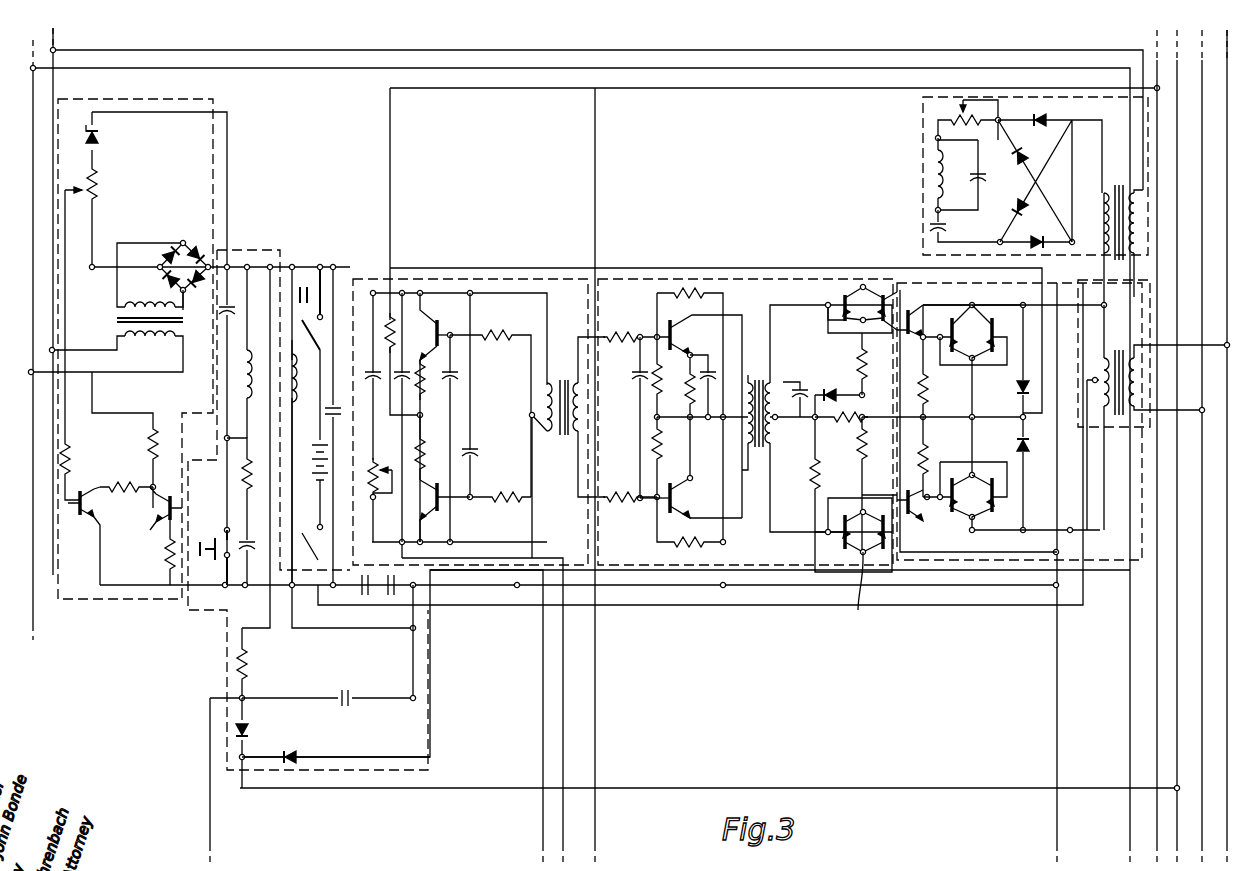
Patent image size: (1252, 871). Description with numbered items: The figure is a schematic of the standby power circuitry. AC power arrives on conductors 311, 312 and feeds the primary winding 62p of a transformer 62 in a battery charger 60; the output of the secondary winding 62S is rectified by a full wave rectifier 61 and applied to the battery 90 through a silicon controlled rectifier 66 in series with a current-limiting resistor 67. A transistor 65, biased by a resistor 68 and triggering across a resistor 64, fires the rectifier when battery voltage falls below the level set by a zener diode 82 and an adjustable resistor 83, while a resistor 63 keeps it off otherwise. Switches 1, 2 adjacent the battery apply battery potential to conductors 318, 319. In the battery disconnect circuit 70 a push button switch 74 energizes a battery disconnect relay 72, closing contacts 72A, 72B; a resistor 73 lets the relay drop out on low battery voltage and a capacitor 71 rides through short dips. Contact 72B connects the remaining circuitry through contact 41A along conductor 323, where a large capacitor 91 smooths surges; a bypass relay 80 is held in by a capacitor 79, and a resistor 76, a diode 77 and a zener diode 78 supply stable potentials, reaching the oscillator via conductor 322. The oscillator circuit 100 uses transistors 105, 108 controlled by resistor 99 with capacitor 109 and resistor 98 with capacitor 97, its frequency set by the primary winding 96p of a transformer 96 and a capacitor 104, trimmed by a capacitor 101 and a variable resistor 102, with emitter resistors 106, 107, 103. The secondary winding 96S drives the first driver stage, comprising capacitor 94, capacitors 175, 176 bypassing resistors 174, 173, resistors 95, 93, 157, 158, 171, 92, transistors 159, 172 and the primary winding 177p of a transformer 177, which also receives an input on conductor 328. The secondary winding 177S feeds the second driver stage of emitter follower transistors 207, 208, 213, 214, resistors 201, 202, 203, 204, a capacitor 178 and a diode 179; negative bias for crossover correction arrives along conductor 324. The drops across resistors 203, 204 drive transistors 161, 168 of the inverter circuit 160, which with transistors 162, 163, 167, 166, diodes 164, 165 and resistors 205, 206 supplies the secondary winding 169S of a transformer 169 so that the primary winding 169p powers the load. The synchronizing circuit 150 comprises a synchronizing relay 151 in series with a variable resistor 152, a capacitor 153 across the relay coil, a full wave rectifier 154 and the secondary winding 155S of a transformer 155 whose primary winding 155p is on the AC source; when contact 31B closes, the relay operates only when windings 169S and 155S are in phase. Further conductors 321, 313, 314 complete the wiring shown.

The conductor 311 is at (33, 50).
The conductor 312 is at (80, 50).
The conductor 318 is at (515, 268).
The conductor 319 is at (650, 605).
The conductor 321 is at (1177, 70).
The conductor 322 is at (1157, 85).
The conductor 323 is at (1057, 805).
The conductor 324 is at (1130, 770).
The conductor 313 is at (543, 825).
The conductor 314 is at (563, 800).
The conductor 328 is at (595, 803).
The battery charger 60 is at (225, 95).
The full wave rectifier 61 is at (175, 242).
The transformer 62 is at (115, 315).
The secondary winding 62S is at (160, 300).
The primary winding 62p is at (160, 344).
The resistor 63 is at (148, 455).
The resistor 64 is at (120, 482).
The transistor 65 is at (95, 515).
The silicon controlled rectifier 66 is at (160, 522).
The resistor 67 is at (165, 553).
The bias resistor 68 is at (68, 445).
The battery disconnect circuit 70 is at (250, 250).
The capacitor 71 is at (230, 300).
The battery disconnect relay 72 is at (250, 345).
The contact 72A is at (319, 447).
The contact 72B is at (390, 600).
The resistor 73 is at (249, 455).
The push button switch 74 is at (215, 535).
The resistor 76 is at (248, 662).
The diode 77 is at (250, 726).
The zener diode 78 is at (298, 752).
The capacitor 79 is at (352, 694).
The contact 41A is at (362, 600).
The bypass relay 80 is at (302, 464).
The zener diode 82 is at (100, 140).
The adjustable resistor 83 is at (100, 192).
The battery 90 is at (330, 420).
The large capacitor 91 is at (420, 400).
The resistor 92 is at (640, 442).
The resistor 93 is at (622, 505).
The capacitor 94 is at (638, 382).
The resistor 95 is at (628, 343).
The transformer 96 is at (564, 378).
The primary winding 96p is at (532, 415).
The secondary winding 96S is at (578, 455).
The capacitor 97 is at (478, 450).
The resistor 98 is at (500, 492).
The resistor 99 is at (490, 342).
The oscillator circuit 100 is at (485, 279).
The capacitor 101 is at (385, 416).
The variable resistor 102 is at (373, 500).
The resistor 103 is at (392, 313).
The capacitor 104 is at (421, 390).
The transistor 105 is at (440, 325).
The resistor 106 is at (408, 378).
The resistor 107 is at (435, 447).
The transistor 108 is at (440, 508).
The capacitor 109 is at (458, 380).
The switch 1 is at (311, 307).
The switch 2 is at (311, 506).
The synchronizing circuit 150 is at (923, 100).
The synchronizing relay 151 is at (940, 170).
The variable resistor 152 is at (935, 128).
The capacitor 153 is at (985, 180).
The full wave rectifier 154 is at (1040, 175).
The transformer 155 is at (1133, 170).
The secondary winding 155S is at (1100, 215).
The primary winding 155p is at (1035, 249).
The contact 31B is at (946, 226).
The resistor 157 is at (715, 289).
The resistor 158 is at (700, 548).
The transistor 159 is at (668, 328).
The inverter circuit 160 is at (900, 283).
The transistor 161 is at (905, 340).
The transistor 162 is at (971, 331).
The transistor 163 is at (984, 359).
The diode 164 is at (1018, 380).
The diode 165 is at (1026, 455).
The transistor 166 is at (1034, 504).
The transistor 167 is at (964, 471).
The transistor 168 is at (905, 520).
The transformer 169 is at (1119, 348).
The primary winding 169p is at (1133, 410).
The secondary winding 169S is at (1108, 415).
The resistor 171 is at (673, 378).
The transistor 172 is at (670, 540).
The resistor 173 is at (673, 458).
The resistor 174 is at (678, 391).
The capacitor 175 is at (695, 352).
The capacitor 176 is at (678, 490).
The transformer 177 is at (759, 378).
The primary winding 177p is at (750, 450).
The secondary winding 177S is at (778, 450).
The capacitor 178 is at (800, 385).
The diode 179 is at (828, 388).
The resistor 201 is at (835, 491).
The resistor 202 is at (845, 423).
The resistor 203 is at (858, 358).
The resistor 204 is at (877, 484).
The resistor 205 is at (928, 388).
The resistor 206 is at (930, 447).
The transistor 207 is at (840, 302).
The transistor 208 is at (880, 290).
The transistor 213 is at (828, 532).
The transistor 214 is at (866, 589).